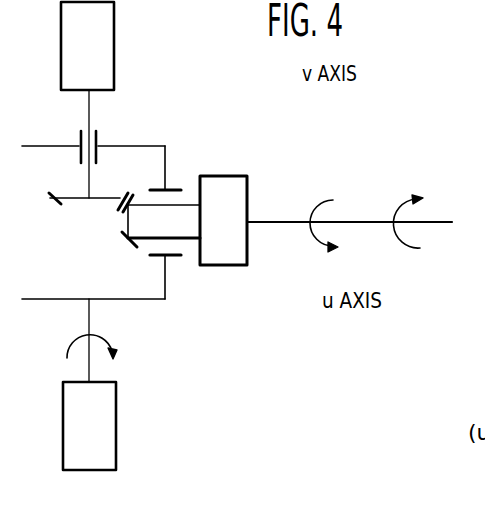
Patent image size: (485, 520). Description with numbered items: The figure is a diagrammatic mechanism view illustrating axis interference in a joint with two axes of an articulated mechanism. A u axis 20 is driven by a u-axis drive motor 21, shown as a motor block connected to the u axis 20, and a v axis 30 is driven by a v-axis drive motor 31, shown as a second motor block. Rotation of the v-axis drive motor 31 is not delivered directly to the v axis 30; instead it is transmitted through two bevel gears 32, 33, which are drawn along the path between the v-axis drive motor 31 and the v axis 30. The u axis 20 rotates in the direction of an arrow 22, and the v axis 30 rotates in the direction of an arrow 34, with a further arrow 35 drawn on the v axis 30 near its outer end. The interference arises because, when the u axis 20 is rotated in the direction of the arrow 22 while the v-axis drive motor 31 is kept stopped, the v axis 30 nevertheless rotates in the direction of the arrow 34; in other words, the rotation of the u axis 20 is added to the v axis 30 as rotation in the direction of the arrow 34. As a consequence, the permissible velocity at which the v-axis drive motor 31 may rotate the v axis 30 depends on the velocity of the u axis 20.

The u axis 20 is at (166, 285).
The u-axis drive motor 21 is at (113, 437).
The arrow indicating u-axis rotation direction 22 is at (110, 345).
The v axis 30 is at (228, 180).
The v-axis drive motor 31 is at (110, 62).
The bevel gear 32 is at (53, 198).
The bevel gear 33 is at (122, 239).
The arrow indicating v-axis rotation direction 34 is at (330, 200).
The rotation about axis 35 is at (407, 200).